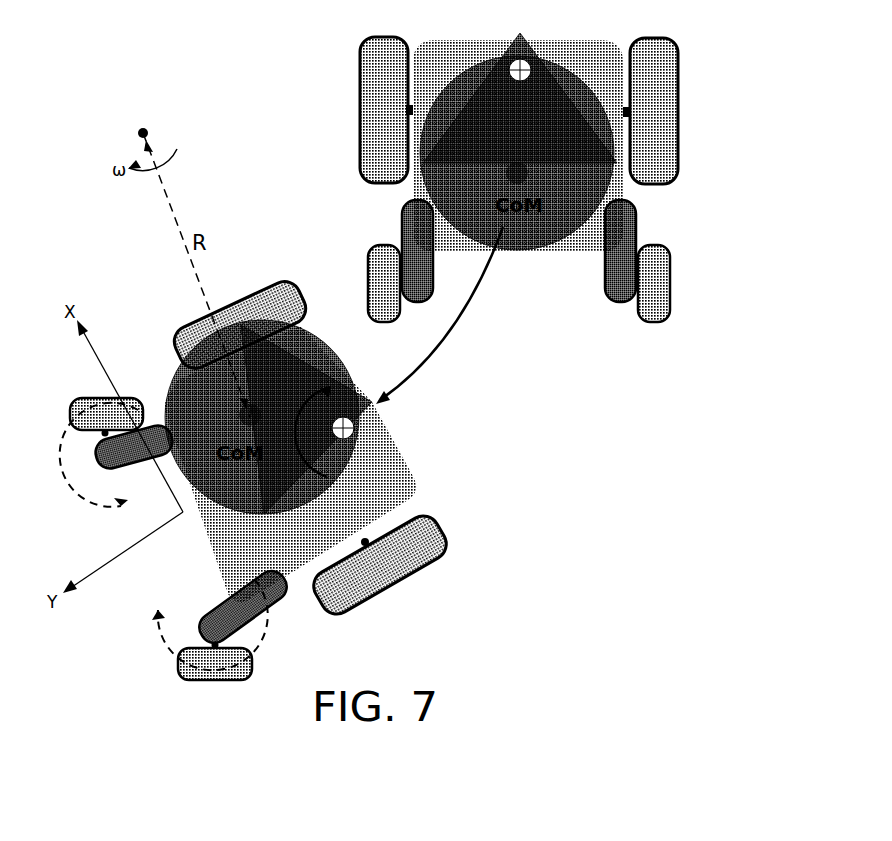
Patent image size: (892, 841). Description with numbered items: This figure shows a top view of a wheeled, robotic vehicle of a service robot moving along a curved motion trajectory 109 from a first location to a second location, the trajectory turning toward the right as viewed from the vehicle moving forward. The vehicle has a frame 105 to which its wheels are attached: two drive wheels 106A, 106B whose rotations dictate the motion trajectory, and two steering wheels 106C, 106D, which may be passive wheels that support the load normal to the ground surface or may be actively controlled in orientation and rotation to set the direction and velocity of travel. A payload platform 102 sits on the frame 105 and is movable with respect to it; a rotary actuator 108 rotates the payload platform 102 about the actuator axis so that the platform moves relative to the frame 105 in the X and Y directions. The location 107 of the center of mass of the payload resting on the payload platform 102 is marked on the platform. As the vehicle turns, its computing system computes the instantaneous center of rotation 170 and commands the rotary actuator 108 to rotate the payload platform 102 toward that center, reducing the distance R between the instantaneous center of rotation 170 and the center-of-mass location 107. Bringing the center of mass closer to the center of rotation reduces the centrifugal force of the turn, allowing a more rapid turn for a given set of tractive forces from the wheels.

The payload platform 102 is at (502, 142).
The frame 105 is at (394, 321).
The drive wheel 106A is at (678, 91).
The drive wheel 106B is at (360, 108).
The steering wheel 106C is at (368, 255).
The steering wheel 106D is at (670, 283).
The location of the center of mass of the payload 107 is at (529, 173).
The rotary actuator 108 is at (355, 427).
The motion trajectory 109 is at (413, 382).
The instantaneous center of rotation 170 is at (139, 131).